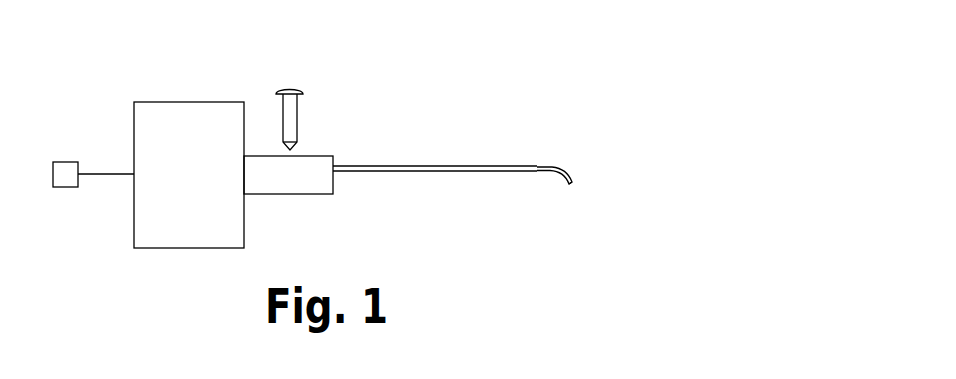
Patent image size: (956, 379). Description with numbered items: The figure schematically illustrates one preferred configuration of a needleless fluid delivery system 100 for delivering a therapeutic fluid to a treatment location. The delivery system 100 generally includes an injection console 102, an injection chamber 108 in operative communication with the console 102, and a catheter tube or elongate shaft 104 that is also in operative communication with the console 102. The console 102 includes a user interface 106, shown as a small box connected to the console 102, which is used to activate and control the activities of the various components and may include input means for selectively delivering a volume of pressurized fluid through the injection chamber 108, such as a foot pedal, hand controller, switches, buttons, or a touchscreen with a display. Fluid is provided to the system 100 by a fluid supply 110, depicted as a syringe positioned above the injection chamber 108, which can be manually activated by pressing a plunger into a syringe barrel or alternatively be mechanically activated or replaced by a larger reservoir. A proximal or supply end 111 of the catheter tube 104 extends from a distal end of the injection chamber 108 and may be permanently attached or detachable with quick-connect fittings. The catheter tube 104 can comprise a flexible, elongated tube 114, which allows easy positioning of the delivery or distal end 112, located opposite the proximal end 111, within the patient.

The needleless fluid delivery system 100 is at (408, 78).
The injection console 102 is at (188, 112).
The catheter tube 104 is at (538, 165).
The user interface 106 is at (62, 160).
The injection chamber 108 is at (313, 160).
The fluid supply 110 is at (291, 111).
The proximal end 111 is at (336, 162).
The distal end 112 is at (572, 185).
The flexible elongated tube 114 is at (455, 165).